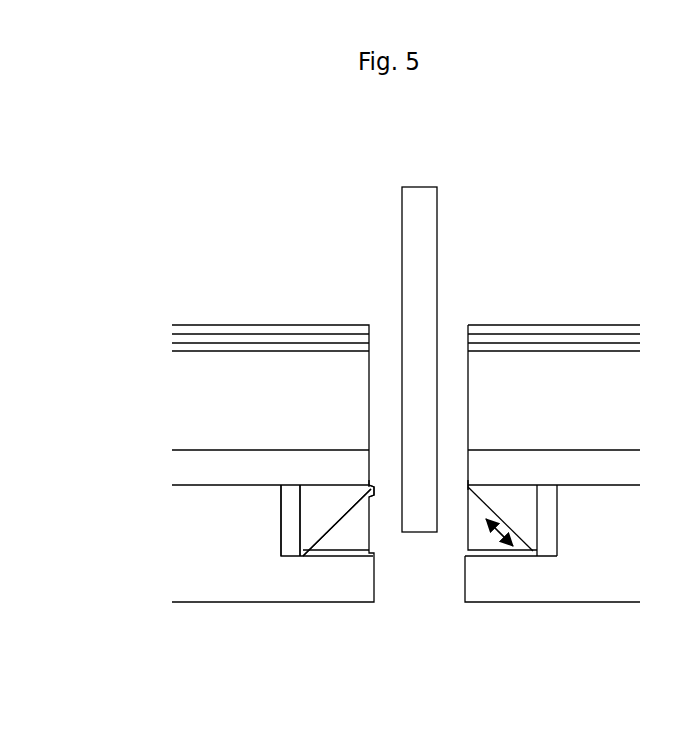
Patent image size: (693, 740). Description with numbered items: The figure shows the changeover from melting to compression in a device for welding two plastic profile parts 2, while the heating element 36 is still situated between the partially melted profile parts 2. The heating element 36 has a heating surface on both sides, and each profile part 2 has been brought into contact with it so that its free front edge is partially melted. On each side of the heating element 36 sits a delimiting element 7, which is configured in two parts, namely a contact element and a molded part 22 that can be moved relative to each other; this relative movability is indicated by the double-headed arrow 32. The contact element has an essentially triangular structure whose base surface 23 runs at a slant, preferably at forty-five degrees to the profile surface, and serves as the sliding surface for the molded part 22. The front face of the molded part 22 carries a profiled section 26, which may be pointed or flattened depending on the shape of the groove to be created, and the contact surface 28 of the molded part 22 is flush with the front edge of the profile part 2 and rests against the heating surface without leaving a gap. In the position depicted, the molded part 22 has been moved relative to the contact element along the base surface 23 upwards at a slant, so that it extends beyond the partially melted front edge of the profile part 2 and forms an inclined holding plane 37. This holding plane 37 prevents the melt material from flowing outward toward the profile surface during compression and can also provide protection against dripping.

The plastic profile part 2 is at (237, 414).
The delimiting element 7 is at (337, 522).
The molded part 22 is at (345, 532).
The base surface 23 is at (335, 515).
The profiled section 26 is at (380, 497).
The contact surface 28 is at (464, 487).
The double-headed arrow 32 is at (501, 519).
The heating element 36 is at (429, 202).
The holding plane 37 is at (370, 482).